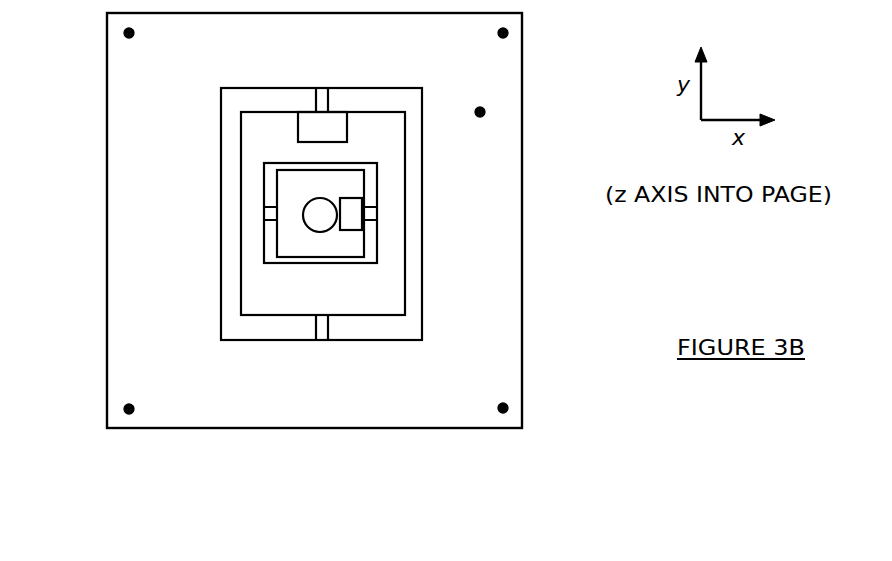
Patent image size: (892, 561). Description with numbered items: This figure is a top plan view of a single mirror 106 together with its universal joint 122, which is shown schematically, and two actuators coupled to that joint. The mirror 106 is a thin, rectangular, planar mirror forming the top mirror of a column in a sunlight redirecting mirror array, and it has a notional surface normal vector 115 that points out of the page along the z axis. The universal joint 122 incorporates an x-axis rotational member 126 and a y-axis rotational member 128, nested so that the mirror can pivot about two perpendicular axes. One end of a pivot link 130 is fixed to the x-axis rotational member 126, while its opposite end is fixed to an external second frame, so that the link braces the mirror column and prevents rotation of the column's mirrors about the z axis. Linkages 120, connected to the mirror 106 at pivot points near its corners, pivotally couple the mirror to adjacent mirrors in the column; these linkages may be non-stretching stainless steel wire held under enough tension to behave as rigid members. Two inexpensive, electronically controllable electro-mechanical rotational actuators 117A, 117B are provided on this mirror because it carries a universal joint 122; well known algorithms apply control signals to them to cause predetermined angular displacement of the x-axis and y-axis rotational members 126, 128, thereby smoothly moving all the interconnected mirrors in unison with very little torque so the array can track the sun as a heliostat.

The mirror 106 is at (107, 258).
The surface normal vector 115 is at (480, 112).
The rotational actuator 117A is at (355, 203).
The rotational actuator 117B is at (335, 120).
The linkage 120 is at (129, 33).
The universal joint 122 is at (395, 320).
The x-axis rotational member 126 is at (373, 220).
The y-axis rotational member 128 is at (313, 327).
The pivot link 130 is at (307, 198).